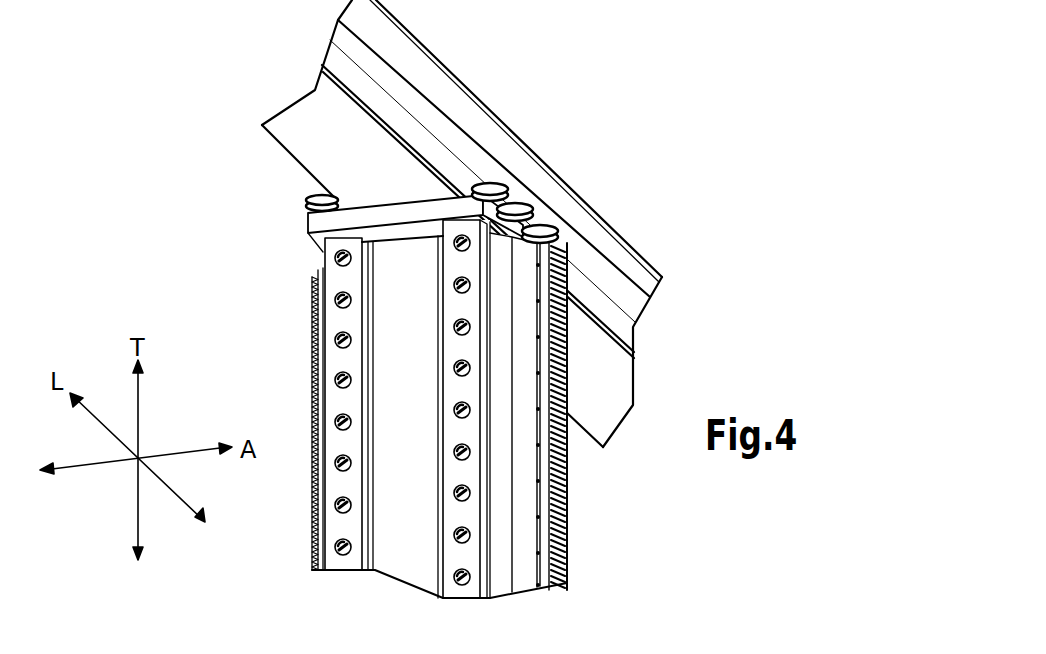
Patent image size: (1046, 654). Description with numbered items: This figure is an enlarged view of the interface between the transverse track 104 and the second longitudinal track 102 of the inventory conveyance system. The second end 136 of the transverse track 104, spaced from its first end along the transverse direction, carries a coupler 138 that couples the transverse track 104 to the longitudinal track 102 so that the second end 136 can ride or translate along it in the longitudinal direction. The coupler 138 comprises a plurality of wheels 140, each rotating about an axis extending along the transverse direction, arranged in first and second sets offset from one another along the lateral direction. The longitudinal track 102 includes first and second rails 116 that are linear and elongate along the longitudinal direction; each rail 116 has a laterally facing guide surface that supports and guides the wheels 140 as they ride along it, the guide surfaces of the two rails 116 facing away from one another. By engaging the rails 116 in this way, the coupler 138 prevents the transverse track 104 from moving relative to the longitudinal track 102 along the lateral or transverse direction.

The longitudinal track 102 is at (563, 182).
The transverse track 104 is at (403, 530).
The rail 116 is at (287, 150).
The second end 136 is at (363, 380).
The coupler 138 is at (305, 229).
The wheels 140 is at (468, 184).